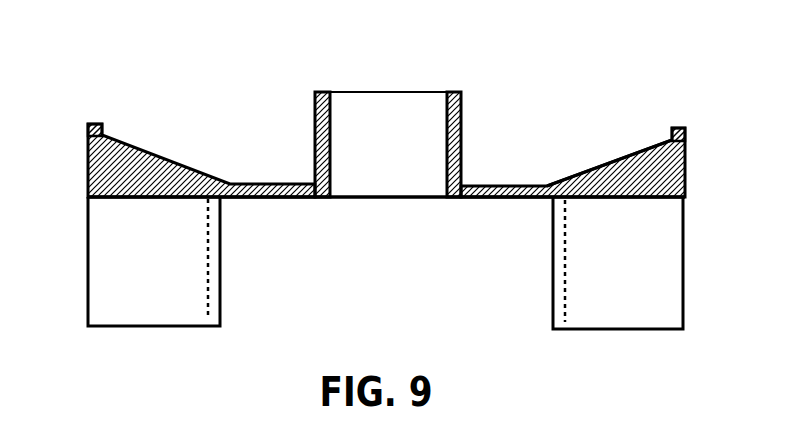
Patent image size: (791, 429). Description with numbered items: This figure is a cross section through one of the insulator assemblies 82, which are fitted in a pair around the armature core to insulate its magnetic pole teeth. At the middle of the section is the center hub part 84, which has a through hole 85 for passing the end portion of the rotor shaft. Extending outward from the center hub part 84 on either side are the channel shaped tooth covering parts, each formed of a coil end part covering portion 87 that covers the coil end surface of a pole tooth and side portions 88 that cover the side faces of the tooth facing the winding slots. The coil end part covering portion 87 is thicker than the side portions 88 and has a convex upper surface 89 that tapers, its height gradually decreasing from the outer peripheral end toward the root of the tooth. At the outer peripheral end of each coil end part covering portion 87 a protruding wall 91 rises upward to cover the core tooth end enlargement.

The insulator assembly 82 is at (210, 132).
The center hub part 84 is at (315, 137).
The through hole 85 is at (412, 110).
The coil end part covering portion 87 is at (600, 167).
The side portion 88 is at (577, 312).
The convex upper surface 89 is at (137, 150).
The protruding wall 91 is at (93, 124).